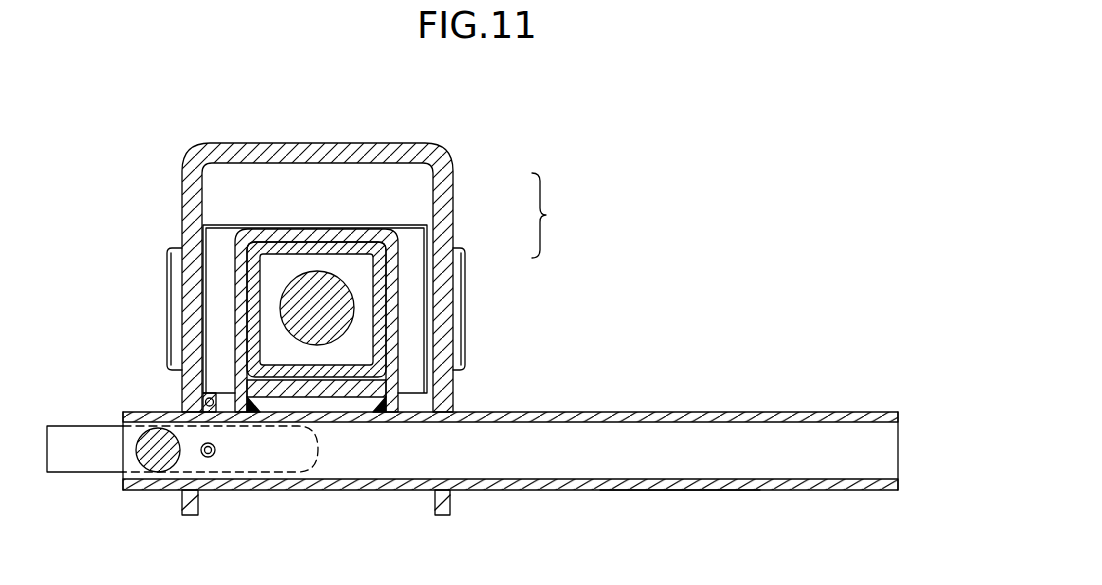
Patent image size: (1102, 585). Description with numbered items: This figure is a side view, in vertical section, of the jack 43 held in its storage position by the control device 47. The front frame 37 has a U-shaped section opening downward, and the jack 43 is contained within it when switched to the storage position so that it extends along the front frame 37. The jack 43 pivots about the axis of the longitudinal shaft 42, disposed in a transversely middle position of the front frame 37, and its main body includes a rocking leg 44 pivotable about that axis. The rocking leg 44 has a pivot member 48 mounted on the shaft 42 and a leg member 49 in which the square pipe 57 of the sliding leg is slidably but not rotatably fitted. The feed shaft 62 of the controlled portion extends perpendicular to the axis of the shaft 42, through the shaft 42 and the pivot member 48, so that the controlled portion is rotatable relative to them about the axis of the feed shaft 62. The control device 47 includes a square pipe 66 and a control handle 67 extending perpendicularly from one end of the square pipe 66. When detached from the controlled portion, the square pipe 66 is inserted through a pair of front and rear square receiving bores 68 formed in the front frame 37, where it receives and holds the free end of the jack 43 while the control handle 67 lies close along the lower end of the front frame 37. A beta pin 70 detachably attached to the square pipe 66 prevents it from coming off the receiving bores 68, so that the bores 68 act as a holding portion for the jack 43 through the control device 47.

The front frame 37 is at (433, 136).
The longitudinal shaft 42 is at (467, 305).
The rocking leg 44 is at (558, 215).
The pivot member 48 is at (427, 233).
The leg member 49 is at (398, 274).
The square pipe 57 is at (378, 327).
The feed shaft 62 is at (297, 287).
The control device 47 is at (734, 402).
The square pipe 66 is at (674, 490).
The control handle 67 is at (80, 432).
The receiving bores 68 is at (182, 483).
The beta pin 70 is at (210, 457).
The jack 43 is at (333, 507).